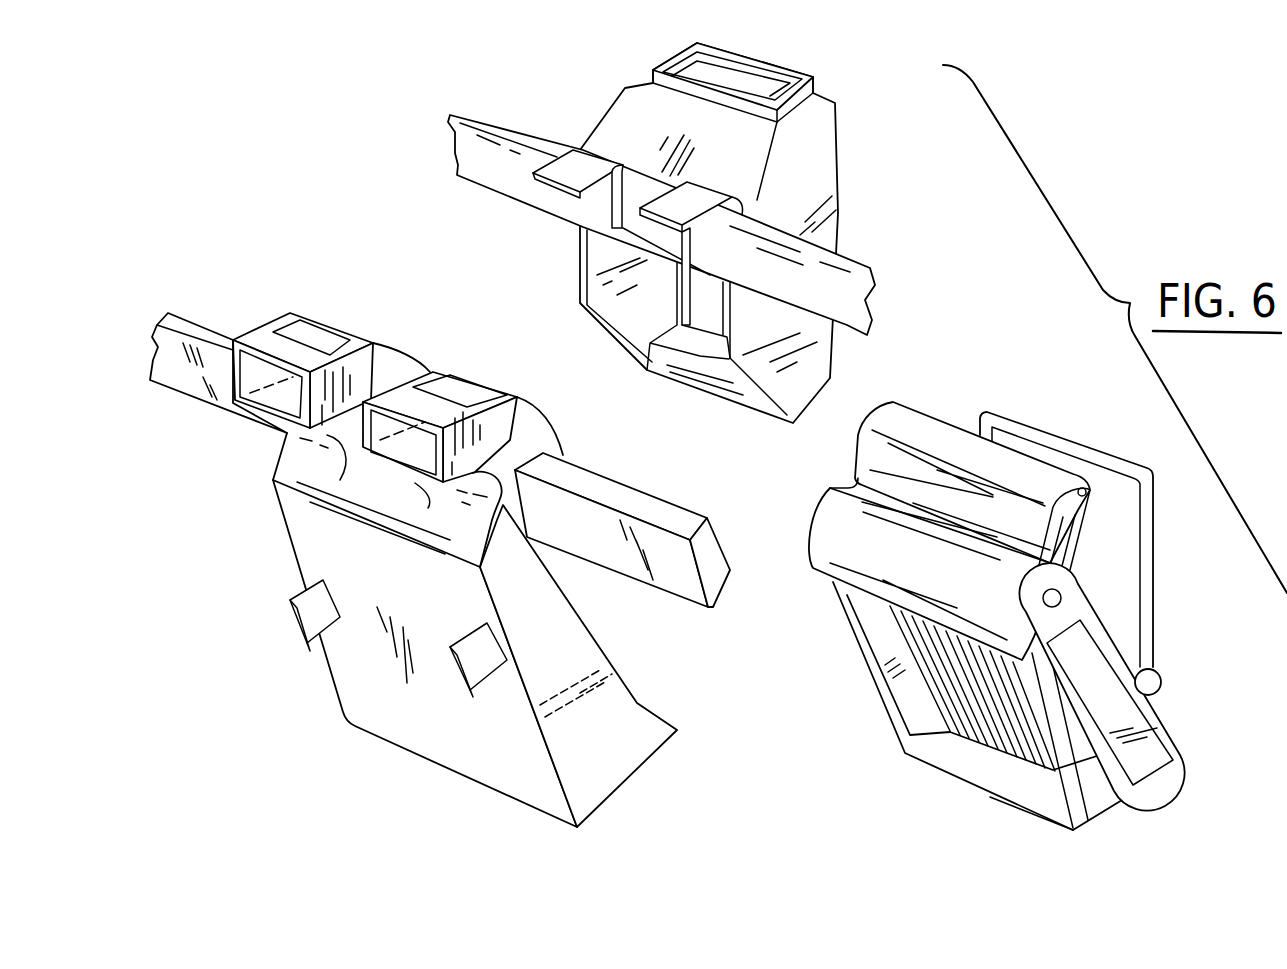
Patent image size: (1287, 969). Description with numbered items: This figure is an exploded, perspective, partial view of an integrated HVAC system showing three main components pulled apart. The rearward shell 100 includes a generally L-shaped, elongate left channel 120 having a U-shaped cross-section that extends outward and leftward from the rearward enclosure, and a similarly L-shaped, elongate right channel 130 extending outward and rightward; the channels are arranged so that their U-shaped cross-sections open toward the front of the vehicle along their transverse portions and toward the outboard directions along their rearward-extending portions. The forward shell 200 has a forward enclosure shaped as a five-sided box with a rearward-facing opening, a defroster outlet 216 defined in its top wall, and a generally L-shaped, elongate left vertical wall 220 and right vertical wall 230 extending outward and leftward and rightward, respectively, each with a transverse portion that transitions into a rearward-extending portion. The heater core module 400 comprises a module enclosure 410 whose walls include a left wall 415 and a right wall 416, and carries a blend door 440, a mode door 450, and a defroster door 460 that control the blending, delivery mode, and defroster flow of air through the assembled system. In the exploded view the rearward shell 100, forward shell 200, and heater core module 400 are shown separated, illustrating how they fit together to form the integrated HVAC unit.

The rearward shell 100 is at (436, 540).
The left channel 120 is at (205, 335).
The right channel 130 is at (612, 498).
The forward shell 200 is at (684, 219).
The defroster outlet 216 is at (732, 77).
The left elongate vertical wall 220 is at (497, 175).
The right elongate vertical wall 230 is at (855, 245).
The heater core module 400 is at (1010, 596).
The module enclosure 410 is at (1170, 732).
The left wall of module enclosure 415 is at (870, 676).
The right wall of module enclosure 416 is at (1087, 667).
The blend door 440 is at (1112, 563).
The mode door 450 is at (832, 548).
The defroster door 460 is at (917, 420).